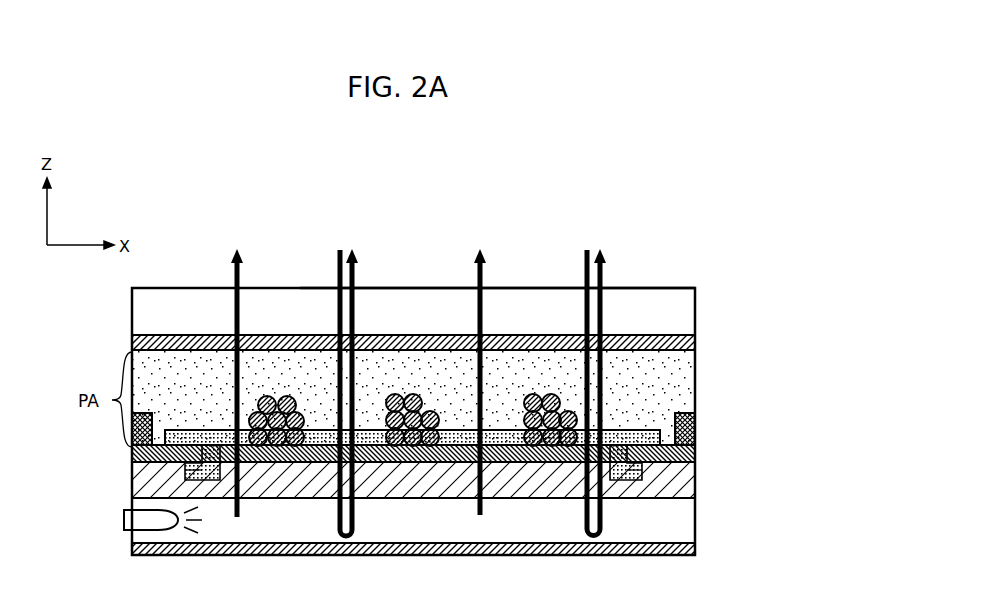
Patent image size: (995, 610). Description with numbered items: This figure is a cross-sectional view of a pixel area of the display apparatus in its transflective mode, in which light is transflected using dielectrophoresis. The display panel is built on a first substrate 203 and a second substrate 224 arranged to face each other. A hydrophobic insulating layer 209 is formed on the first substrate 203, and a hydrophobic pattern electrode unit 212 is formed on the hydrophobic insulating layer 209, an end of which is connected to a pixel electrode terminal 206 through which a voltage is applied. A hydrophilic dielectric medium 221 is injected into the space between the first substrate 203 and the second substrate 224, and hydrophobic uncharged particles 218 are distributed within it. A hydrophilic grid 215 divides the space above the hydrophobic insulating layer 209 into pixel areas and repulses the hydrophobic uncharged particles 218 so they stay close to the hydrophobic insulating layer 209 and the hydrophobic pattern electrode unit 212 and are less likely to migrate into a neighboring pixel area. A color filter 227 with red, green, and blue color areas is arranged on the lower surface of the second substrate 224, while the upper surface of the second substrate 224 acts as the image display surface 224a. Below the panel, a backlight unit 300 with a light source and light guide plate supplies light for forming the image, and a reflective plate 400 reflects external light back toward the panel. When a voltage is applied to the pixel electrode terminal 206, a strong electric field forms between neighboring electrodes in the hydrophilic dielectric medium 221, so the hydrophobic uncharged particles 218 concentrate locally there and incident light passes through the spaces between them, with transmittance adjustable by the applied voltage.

The first substrate 203 is at (138, 477).
The pixel electrode terminal 206 is at (693, 487).
The hydrophobic insulating layer 209 is at (697, 455).
The hydrophobic pattern electrode unit 212 is at (698, 475).
The hydrophilic grid 215 is at (698, 428).
The hydrophobic uncharged particles 218 is at (553, 395).
The hydrophilic dielectric medium 221 is at (683, 368).
The second substrate 224 is at (683, 303).
The image display surface 224a is at (637, 290).
The color filter 227 is at (690, 338).
The backlight unit 300 is at (685, 525).
The reflective plate 400 is at (698, 553).